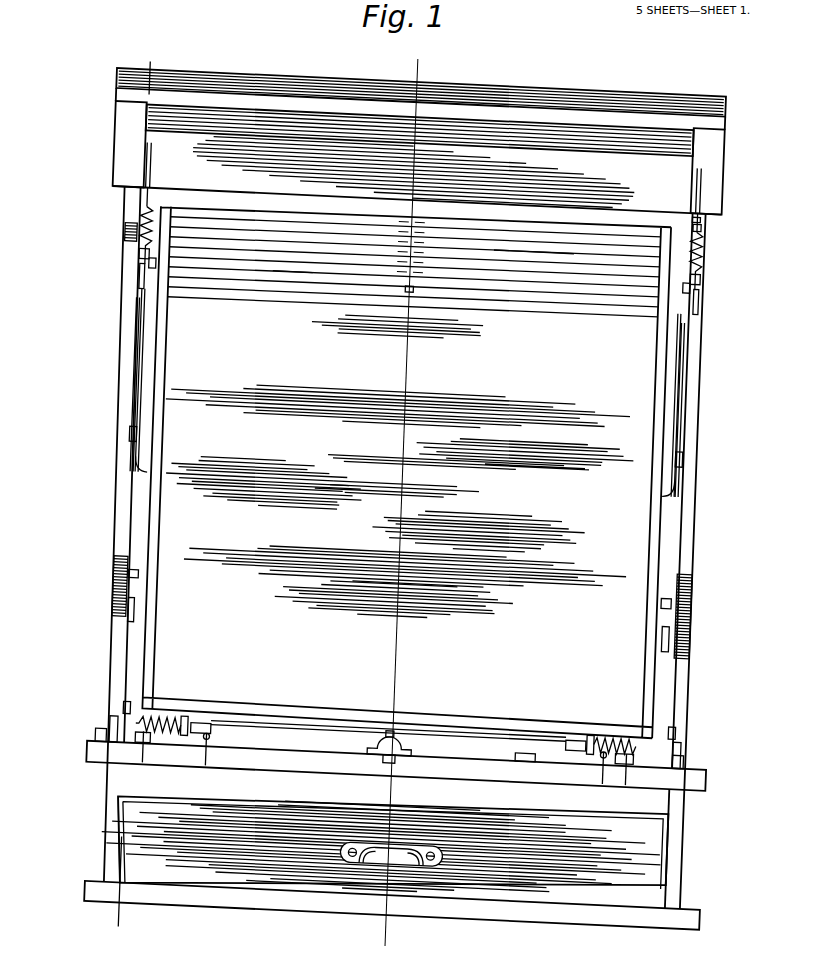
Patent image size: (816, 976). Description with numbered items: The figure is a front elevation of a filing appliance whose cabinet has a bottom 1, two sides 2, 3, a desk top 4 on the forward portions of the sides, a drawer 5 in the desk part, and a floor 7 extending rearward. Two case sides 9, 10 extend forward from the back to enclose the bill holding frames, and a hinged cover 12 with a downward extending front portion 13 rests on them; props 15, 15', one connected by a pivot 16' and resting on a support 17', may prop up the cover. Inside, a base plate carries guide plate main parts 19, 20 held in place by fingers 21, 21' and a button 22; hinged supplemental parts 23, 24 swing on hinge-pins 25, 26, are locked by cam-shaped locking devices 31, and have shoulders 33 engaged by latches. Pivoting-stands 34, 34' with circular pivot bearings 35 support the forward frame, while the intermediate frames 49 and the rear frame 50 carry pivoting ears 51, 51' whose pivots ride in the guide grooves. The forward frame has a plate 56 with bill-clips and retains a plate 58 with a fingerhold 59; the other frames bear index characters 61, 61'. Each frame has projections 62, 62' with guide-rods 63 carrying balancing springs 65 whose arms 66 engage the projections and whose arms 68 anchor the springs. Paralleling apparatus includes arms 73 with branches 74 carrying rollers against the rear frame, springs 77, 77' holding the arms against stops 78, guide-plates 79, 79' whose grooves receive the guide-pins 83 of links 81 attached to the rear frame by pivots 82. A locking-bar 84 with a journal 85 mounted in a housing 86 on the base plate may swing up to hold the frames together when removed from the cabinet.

The bottom 1 is at (292, 908).
The side 2 is at (85, 827).
The side 3 is at (686, 860).
The desk top 4 is at (305, 768).
The drawer 5 is at (391, 848).
The floor 7 is at (402, 501).
The case side 9 is at (122, 515).
The case side 10 is at (692, 540).
The cover 12 is at (118, 128).
The front portion 13 is at (272, 132).
The prop 15 is at (104, 175).
The prop 15' is at (727, 200).
The pivot 16' is at (675, 206).
The support 17' is at (722, 224).
The guide plate main part 19 is at (98, 730).
The guide plate main part 20 is at (672, 760).
The finger 21 is at (205, 761).
The finger 21' is at (593, 779).
The button 22 is at (392, 760).
The supplemental guide plate part 23 is at (122, 640).
The supplemental guide plate part 24 is at (673, 662).
The hinge-pin 25 is at (140, 576).
The hinge-pin 26 is at (660, 600).
The locking device 31 is at (126, 712).
The shoulder 33 is at (664, 647).
The pivoting-stand 34 is at (84, 753).
The pivoting-stand 34' is at (716, 769).
The pivot bearing 35 is at (131, 617).
The intermediate frame 49 is at (292, 272).
The rear frame 50 is at (414, 258).
The pivoting ear 51 is at (150, 758).
The pivoting ear 51' is at (637, 782).
The plate 56 is at (540, 285).
The plate 58 is at (406, 470).
The fingerhold 59 is at (408, 287).
The index character 61 is at (367, 266).
The index character 61' is at (457, 267).
The projection 62 is at (381, 848).
The projection 62' is at (504, 773).
The guide-rod 63 is at (207, 712).
The balancing spring 65 is at (165, 718).
The spring arm 66 is at (222, 718).
The spring arm 68 is at (165, 740).
The arm 73 is at (141, 276).
The branch 74 is at (140, 462).
The spring 77 is at (107, 234).
The spring 77' is at (719, 261).
The stop 78 is at (147, 258).
The guide-plate 79 is at (107, 384).
The guide-plate 79' is at (711, 410).
The link 81 is at (152, 392).
The pivot 82 is at (163, 268).
The guide-pin 83 is at (140, 428).
The locking-bar 84 is at (388, 730).
The journal 85 is at (402, 742).
The housing 86 is at (393, 732).